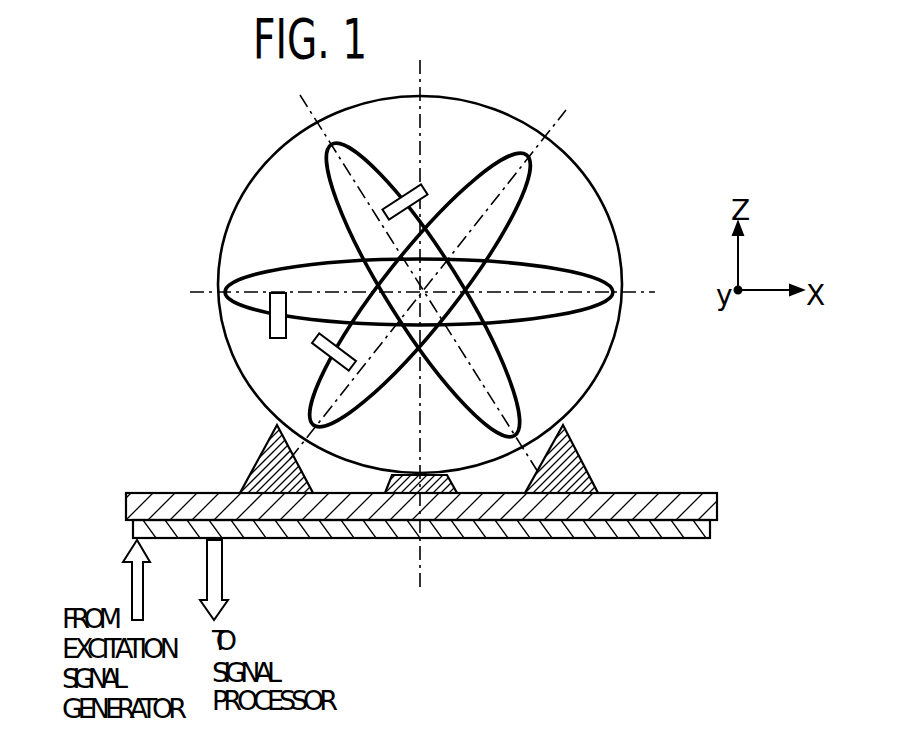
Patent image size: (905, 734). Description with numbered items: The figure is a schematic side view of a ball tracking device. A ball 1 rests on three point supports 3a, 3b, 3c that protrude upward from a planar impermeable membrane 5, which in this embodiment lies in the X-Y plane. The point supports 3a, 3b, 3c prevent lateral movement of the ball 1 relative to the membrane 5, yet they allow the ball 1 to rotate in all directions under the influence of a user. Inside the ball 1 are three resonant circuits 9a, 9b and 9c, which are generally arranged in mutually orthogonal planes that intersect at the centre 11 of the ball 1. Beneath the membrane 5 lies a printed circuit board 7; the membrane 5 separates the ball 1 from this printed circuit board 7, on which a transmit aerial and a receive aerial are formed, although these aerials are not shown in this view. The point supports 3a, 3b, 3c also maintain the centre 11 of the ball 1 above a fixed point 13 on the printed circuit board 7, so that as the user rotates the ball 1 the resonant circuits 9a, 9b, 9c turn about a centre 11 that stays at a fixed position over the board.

The ball 1 is at (500, 110).
The point support 3a is at (253, 468).
The point support 3b is at (388, 481).
The point support 3c is at (576, 449).
The planar impermeable membrane 5 is at (690, 492).
The printed circuit board 7 is at (645, 540).
The resonant circuit 9a is at (318, 174).
The resonant circuit 9b is at (275, 264).
The resonant circuit 9c is at (314, 386).
The centre of the ball 11 is at (407, 285).
The fixed point 13 is at (420, 560).